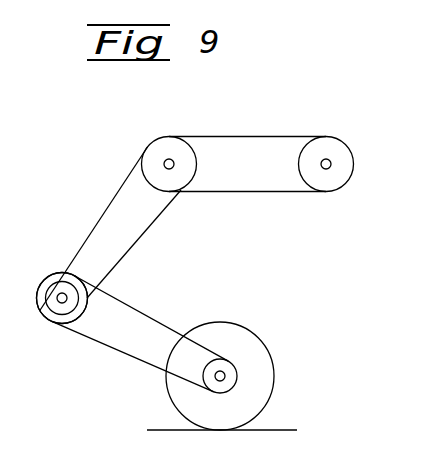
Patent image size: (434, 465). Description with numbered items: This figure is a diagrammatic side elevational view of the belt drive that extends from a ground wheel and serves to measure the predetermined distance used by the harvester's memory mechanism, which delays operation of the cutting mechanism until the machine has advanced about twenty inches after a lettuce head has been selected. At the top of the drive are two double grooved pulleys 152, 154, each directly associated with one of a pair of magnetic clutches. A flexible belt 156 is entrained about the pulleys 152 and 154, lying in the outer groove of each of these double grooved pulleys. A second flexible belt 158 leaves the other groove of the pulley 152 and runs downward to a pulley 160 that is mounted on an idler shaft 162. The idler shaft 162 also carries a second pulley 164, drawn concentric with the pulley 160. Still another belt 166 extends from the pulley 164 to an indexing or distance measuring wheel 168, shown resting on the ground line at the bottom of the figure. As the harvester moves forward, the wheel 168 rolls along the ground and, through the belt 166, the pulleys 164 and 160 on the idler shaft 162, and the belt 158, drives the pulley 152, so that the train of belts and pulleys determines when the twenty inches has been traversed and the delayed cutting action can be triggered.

The double grooved pulley 152 is at (152, 150).
The double grooved pulley 154 is at (341, 163).
The flexible belt 156 is at (262, 136).
The flexible belt 158 is at (152, 225).
The pulley 160 is at (57, 307).
The idler shaft 162 is at (53, 284).
The second pulley 164 is at (87, 315).
The belt 166 is at (161, 323).
The indexing or distance measuring wheel 168 is at (255, 353).